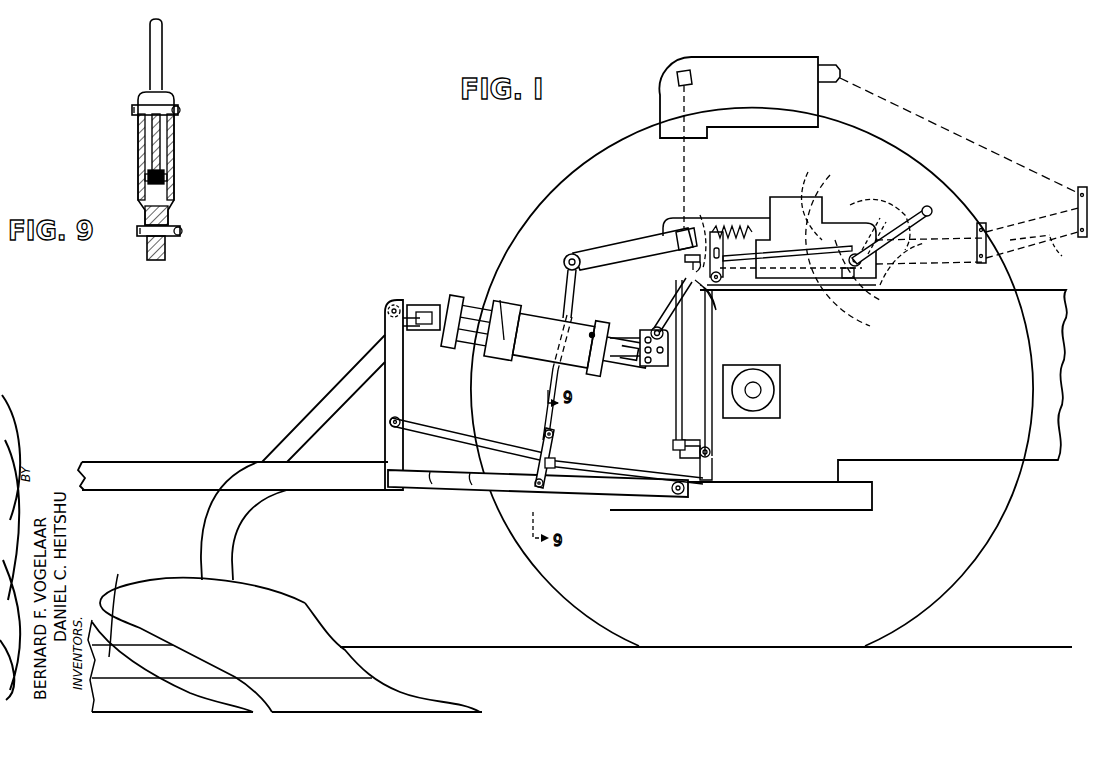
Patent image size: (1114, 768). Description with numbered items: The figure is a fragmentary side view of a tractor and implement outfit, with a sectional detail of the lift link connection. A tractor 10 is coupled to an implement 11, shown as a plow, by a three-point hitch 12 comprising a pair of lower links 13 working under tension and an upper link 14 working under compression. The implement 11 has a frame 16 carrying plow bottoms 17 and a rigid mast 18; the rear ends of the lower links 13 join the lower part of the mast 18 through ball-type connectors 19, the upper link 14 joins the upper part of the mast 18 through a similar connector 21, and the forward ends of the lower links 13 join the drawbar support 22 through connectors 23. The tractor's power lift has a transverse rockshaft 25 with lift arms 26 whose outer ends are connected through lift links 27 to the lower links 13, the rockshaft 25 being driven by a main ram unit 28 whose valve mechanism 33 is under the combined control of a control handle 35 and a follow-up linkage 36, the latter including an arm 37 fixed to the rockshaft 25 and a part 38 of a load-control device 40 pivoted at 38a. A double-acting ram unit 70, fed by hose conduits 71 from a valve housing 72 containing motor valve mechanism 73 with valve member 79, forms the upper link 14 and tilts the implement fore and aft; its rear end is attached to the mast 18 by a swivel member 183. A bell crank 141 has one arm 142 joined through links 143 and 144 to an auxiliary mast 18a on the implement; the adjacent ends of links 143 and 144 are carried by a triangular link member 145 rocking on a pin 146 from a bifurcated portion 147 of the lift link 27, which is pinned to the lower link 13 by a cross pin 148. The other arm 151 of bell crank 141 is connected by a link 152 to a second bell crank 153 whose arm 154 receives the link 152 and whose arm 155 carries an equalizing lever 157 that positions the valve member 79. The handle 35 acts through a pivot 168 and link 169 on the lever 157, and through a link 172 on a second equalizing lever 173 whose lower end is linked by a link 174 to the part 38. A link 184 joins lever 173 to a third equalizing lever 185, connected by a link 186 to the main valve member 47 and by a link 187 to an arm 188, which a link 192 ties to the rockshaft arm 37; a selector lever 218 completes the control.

In FIG. 1, the tractor 10 is at (1046, 462).
In FIG. 1, the implement 11 is at (303, 365).
In FIG. 1, the hitch means or draft linkage 12 is at (414, 503).
In FIG. 9, the lower links 13 is at (160, 260).
In FIG. 1, the lower links 13 is at (425, 488).
In FIG. 1, the upper link 14 is at (457, 292).
In FIG. 1, the frame 16 is at (210, 460).
In FIG. 1, the plow bottoms 17 is at (137, 595).
In FIG. 1, the mast 18 is at (406, 386).
In FIG. 1, the auxiliary mast 18a is at (390, 424).
In FIG. 1, the ball-type connectors 19 is at (394, 486).
In FIG. 1, the ball-type connector 21 is at (394, 305).
In FIG. 1, the drawbar support 22 is at (795, 512).
In FIG. 1, the ball-type connectors 23 is at (678, 496).
In FIG. 1, the rockshaft 25 is at (679, 72).
In FIG. 1, the lift arms 26 is at (622, 243).
In FIG. 9, the lift links 27 is at (158, 40).
In FIG. 1, the lift links 27 is at (551, 372).
In FIG. 1, the main ram unit 28 is at (722, 55).
In FIG. 1, the valve mechanism 33 is at (855, 215).
In FIG. 1, the control handle 35 is at (907, 212).
In FIG. 1, the follow-up linkage 36 is at (843, 260).
In FIG. 1, the arm 37 is at (683, 258).
In FIG. 1, the upwardly extending part 38 is at (672, 308).
In FIG. 1, the pivot member 38a is at (651, 332).
In FIG. 1, the load-control device 40 is at (649, 370).
In FIG. 1, the main ram unit valve member 47 is at (832, 64).
In FIG. 1, the double-acting ram unit 70 is at (493, 352).
In FIG. 1, the hose conduits 71 is at (598, 324).
In FIG. 1, the valve housing 72 is at (791, 195).
In FIG. 1, the motor valve mechanism 73 is at (765, 260).
In FIG. 1, the valve member 79 is at (742, 226).
In FIG. 1, the bell crank 141 is at (681, 452).
In FIG. 1, the arm 142 is at (713, 455).
In FIG. 9, the link 143 is at (165, 180).
In FIG. 1, the link 143 is at (594, 468).
In FIG. 1, the link 144 is at (452, 432).
In FIG. 9, the triangular link member 145 is at (160, 148).
In FIG. 1, the triangular link member 145 is at (543, 440).
In FIG. 9, the pin 146 is at (178, 110).
In FIG. 9, the bifurcated portion 147 is at (136, 145).
In FIG. 1, the bifurcated portion 147 is at (551, 446).
In FIG. 9, the cross pin 148 is at (180, 231).
In FIG. 1, the cross pin 148 is at (545, 490).
In FIG. 1, the arm 151 is at (700, 445).
In FIG. 1, the link 152 is at (676, 412).
In FIG. 1, the bell crank 153 is at (716, 290).
In FIG. 1, the arm 154 is at (712, 316).
In FIG. 1, the arm 155 is at (704, 219).
In FIG. 1, the equalizing lever 157 is at (732, 266).
In FIG. 1, the pivot 168 is at (852, 280).
In FIG. 1, the link 169 is at (795, 272).
In FIG. 1, the link 172 is at (909, 231).
In FIG. 1, the second equalizing lever 173 is at (990, 252).
In FIG. 1, the link 174 is at (906, 265).
In FIG. 1, the swivel member 183 is at (425, 325).
In FIG. 1, the link 184 is at (1020, 235).
In FIG. 1, the third equalizing lever 185 is at (1076, 194).
In FIG. 1, the link 186 is at (952, 130).
In FIG. 1, the link 187 is at (950, 248).
In FIG. 1, the arm 188 is at (823, 196).
In FIG. 1, the link 192 is at (786, 253).
In FIG. 1, the selector lever 218 is at (882, 215).